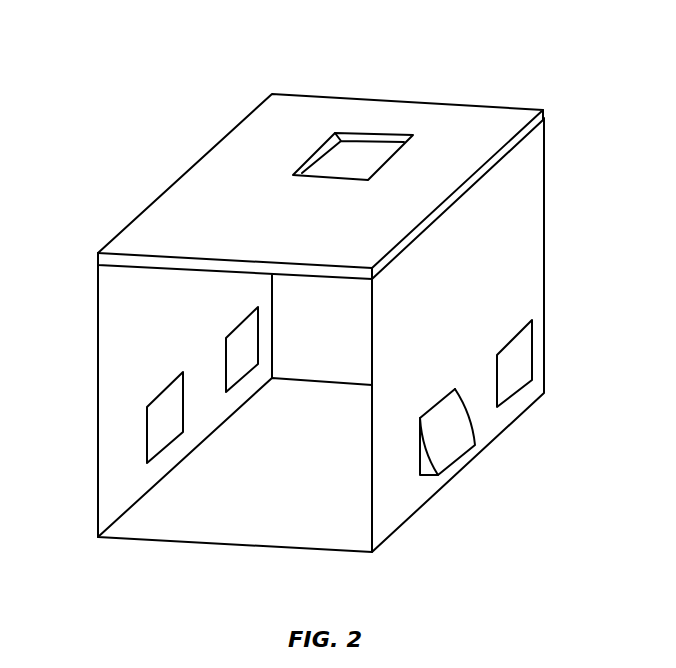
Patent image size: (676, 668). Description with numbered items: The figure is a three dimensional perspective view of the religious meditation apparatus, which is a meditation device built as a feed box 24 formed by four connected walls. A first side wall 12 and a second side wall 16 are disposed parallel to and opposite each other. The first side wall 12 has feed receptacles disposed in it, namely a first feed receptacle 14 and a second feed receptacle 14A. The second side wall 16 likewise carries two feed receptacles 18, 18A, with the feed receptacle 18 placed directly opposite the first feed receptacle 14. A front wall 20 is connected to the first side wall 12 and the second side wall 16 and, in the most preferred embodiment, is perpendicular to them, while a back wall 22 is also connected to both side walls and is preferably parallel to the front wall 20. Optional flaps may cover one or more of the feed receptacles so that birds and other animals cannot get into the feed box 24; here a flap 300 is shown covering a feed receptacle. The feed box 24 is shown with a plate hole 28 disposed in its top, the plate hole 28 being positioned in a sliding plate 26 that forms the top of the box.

The first side wall 12 is at (97, 468).
The first feed receptacle 14 is at (233, 365).
The second feed receptacle 14A is at (160, 427).
The second side wall 16 is at (530, 195).
The feed receptacle 18 is at (520, 352).
The feed receptacle 18A is at (422, 474).
The front wall 20 is at (232, 523).
The back wall 22 is at (478, 108).
The feed box 24 is at (580, 70).
The sliding plate 26 is at (233, 158).
The plate hole 28 is at (362, 157).
The flap 300 is at (438, 437).